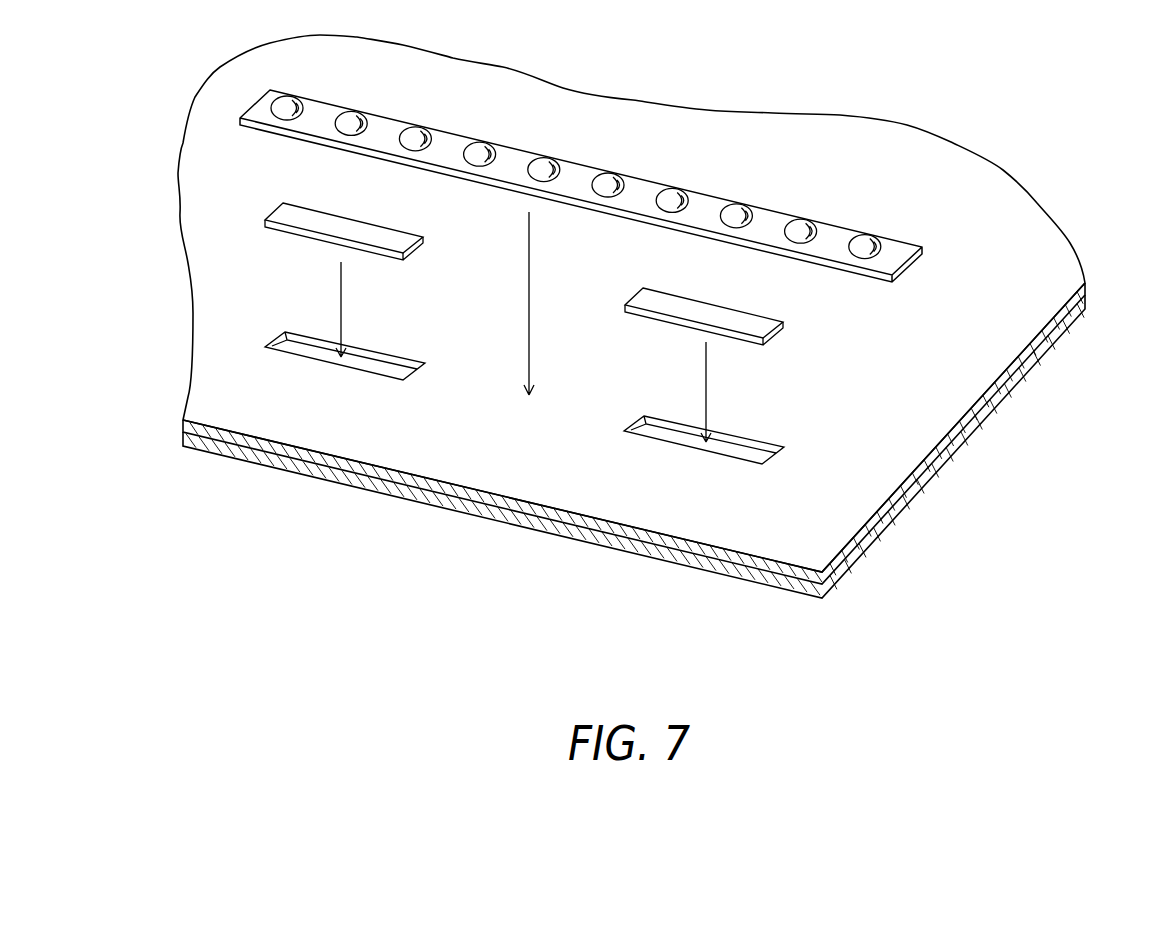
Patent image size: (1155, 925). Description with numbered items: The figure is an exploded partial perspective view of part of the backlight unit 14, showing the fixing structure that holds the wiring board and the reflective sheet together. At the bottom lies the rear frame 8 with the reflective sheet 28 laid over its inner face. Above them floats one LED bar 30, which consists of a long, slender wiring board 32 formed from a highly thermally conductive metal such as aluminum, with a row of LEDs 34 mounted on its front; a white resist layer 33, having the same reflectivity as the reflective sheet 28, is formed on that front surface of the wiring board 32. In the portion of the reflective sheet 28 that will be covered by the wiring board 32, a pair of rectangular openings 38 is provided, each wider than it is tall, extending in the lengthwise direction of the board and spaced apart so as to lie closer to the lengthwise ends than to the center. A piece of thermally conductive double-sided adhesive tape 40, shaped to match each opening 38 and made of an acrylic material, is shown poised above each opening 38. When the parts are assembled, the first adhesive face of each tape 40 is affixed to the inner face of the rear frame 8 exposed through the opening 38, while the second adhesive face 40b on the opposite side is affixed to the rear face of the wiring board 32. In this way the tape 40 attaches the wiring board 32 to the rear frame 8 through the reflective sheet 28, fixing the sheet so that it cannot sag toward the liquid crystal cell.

The rear frame 8 is at (997, 403).
The backlight unit 14 is at (957, 202).
The reflective sheet 28 is at (997, 347).
The LED bar 30 is at (581, 186).
The wiring board 32 is at (730, 183).
The white resist layer 33 is at (583, 177).
The LED 34 is at (610, 180).
The opening 38 is at (370, 367).
The double-sided adhesive tape 40 is at (550, 263).
The second adhesive face 40b is at (343, 227).